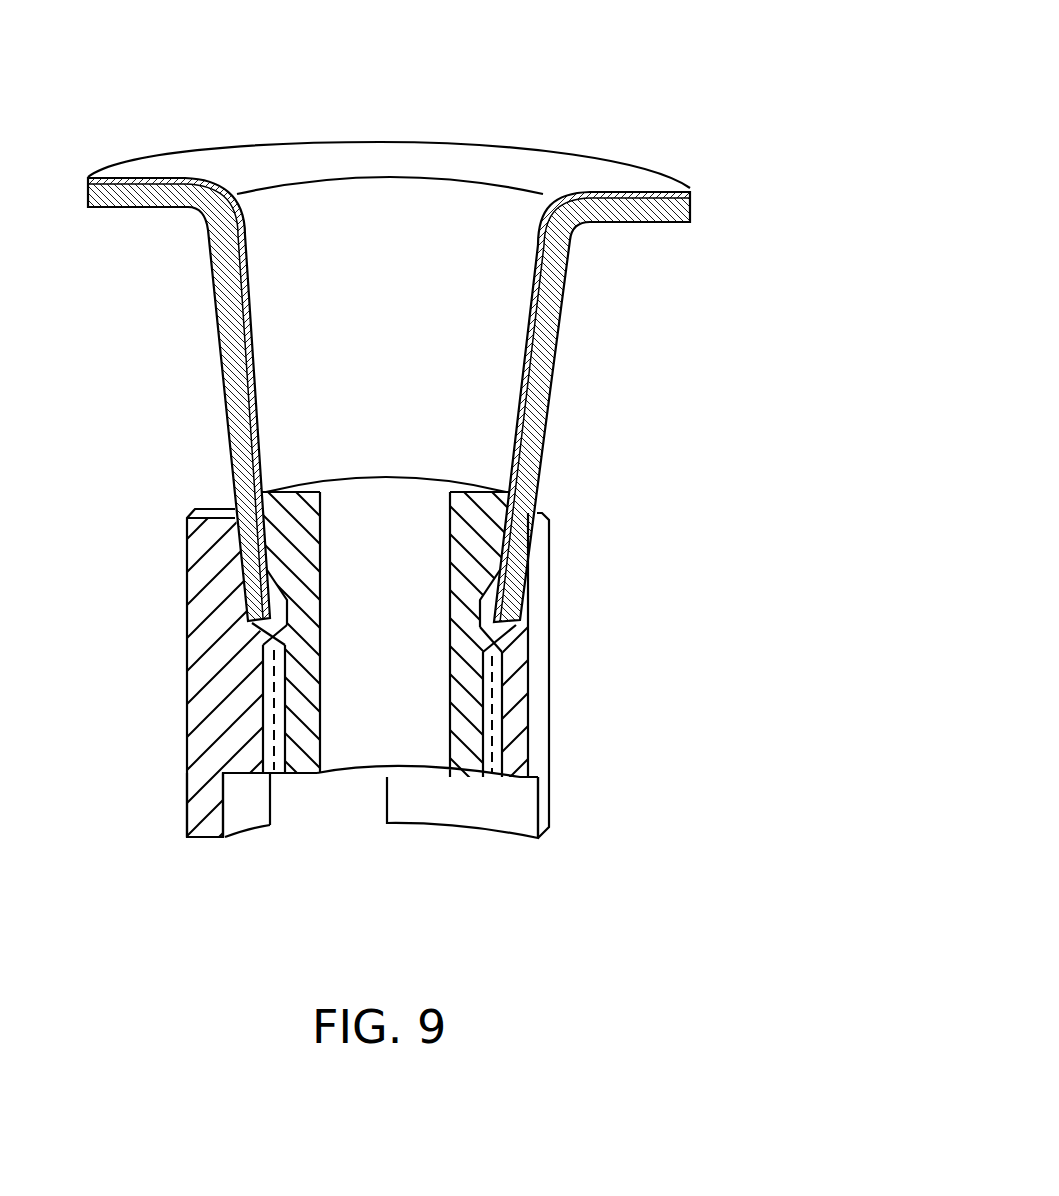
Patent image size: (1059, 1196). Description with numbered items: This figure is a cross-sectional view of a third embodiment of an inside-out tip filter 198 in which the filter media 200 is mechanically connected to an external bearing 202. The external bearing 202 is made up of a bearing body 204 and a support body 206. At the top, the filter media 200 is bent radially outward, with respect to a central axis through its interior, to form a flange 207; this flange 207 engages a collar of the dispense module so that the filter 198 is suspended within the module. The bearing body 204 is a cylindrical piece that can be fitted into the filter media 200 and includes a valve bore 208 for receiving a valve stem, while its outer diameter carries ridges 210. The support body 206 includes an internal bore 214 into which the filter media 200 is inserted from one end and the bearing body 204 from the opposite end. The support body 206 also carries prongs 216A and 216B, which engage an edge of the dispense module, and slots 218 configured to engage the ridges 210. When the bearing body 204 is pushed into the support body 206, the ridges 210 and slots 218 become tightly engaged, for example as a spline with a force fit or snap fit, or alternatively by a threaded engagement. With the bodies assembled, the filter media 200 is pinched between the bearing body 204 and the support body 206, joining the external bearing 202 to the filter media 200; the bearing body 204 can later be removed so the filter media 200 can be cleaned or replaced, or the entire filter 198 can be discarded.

The inside-out tip filter 198 is at (415, 488).
The filter media 200 is at (431, 321).
The flange 207 is at (582, 162).
The external bearing 202 is at (368, 716).
The bearing body 204 is at (358, 716).
The support body 206 is at (538, 588).
The valve bore 208 is at (368, 748).
The ridges 210 is at (258, 752).
The internal bore 214 is at (260, 628).
The prong 216A is at (200, 811).
The prong 216B is at (522, 807).
The slots 218 is at (484, 735).